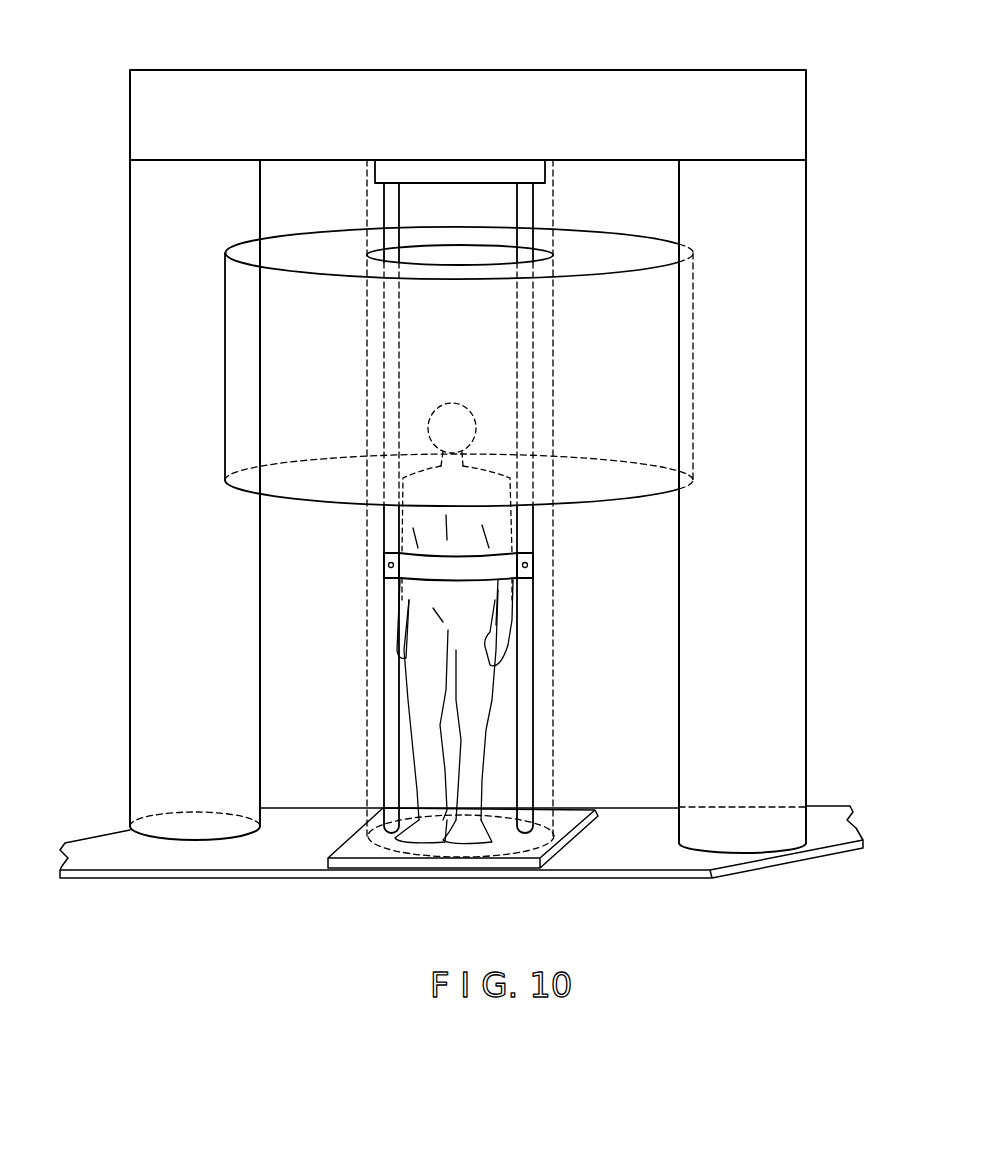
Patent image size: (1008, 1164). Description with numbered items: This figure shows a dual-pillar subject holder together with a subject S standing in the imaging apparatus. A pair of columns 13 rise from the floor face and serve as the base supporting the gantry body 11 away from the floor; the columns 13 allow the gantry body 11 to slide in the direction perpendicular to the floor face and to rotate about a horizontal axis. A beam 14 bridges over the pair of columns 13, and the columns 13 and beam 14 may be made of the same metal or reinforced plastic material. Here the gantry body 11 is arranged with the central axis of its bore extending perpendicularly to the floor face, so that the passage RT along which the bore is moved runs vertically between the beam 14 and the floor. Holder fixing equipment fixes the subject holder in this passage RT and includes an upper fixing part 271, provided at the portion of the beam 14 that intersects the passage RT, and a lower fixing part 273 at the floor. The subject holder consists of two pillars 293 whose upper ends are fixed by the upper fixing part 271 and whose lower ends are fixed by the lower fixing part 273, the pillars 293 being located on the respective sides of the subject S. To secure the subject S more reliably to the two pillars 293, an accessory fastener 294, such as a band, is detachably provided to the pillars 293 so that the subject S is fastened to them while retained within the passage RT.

The beam 14 is at (720, 80).
The column 13 is at (147, 556).
The gantry body 11 is at (602, 250).
The upper fixing part 271 is at (493, 170).
The passage RT is at (378, 691).
The pillars 293 is at (392, 545).
The accessory fastener 294 is at (383, 578).
The subject S is at (508, 602).
The lower fixing part 273 is at (565, 822).